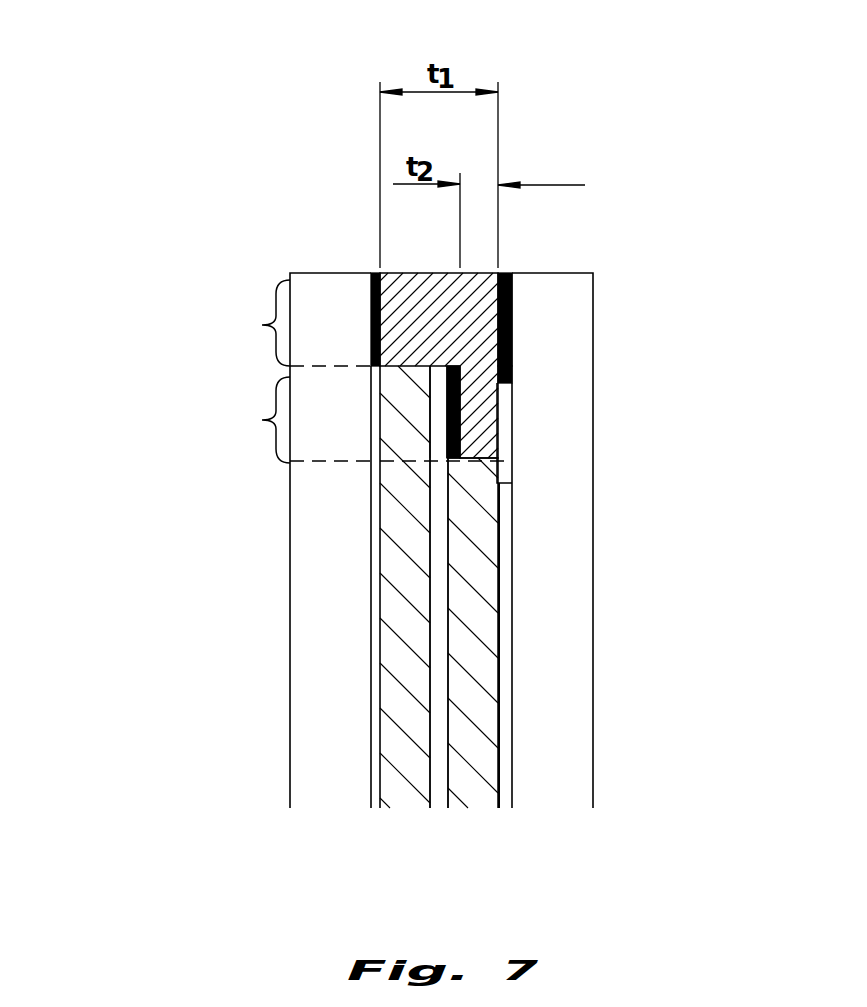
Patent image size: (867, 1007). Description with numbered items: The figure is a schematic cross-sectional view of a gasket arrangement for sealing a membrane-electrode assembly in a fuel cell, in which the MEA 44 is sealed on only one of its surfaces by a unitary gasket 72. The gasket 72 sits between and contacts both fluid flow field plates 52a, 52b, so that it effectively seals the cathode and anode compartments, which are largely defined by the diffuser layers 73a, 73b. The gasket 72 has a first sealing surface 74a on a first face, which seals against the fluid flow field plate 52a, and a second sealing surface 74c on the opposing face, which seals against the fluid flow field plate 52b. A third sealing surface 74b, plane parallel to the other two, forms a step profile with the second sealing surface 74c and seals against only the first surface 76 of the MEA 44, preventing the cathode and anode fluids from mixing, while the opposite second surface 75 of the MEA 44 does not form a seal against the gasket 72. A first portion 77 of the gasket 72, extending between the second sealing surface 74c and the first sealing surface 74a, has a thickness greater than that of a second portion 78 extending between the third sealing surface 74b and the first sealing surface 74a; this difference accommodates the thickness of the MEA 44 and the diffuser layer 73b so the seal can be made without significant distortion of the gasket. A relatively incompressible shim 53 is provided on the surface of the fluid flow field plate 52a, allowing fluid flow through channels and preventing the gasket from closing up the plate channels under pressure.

The membrane-electrode assembly 44 is at (437, 722).
The fluid flow field plate 52a is at (583, 523).
The fluid flow field plate 52b is at (356, 556).
The shim 53 is at (503, 425).
The gasket 72 is at (452, 303).
The diffuser layer 73a is at (470, 638).
The diffuser layer 73b is at (403, 625).
The first sealing surface 74a is at (512, 280).
The third sealing surface 74b is at (512, 352).
The second sealing surface 74c is at (370, 273).
The second surface of the MEA 75 is at (452, 432).
The first surface of the MEA 76 is at (447, 428).
The first portion of the gasket 77 is at (260, 325).
The second portion of the gasket 78 is at (260, 420).